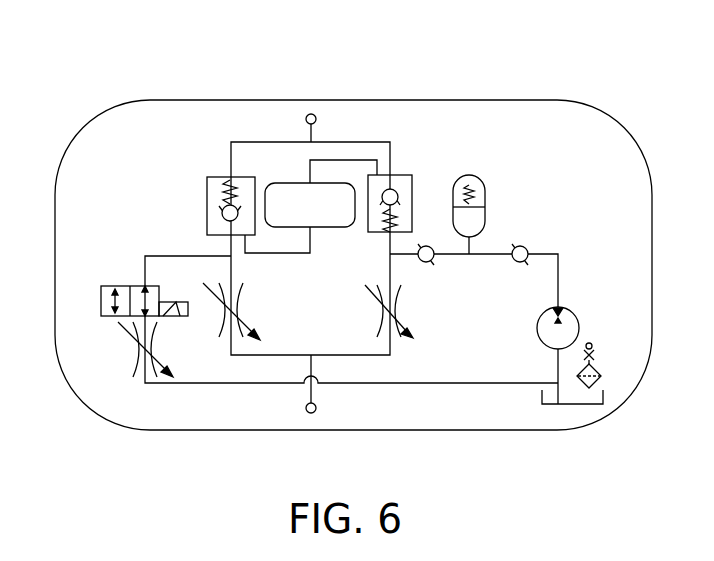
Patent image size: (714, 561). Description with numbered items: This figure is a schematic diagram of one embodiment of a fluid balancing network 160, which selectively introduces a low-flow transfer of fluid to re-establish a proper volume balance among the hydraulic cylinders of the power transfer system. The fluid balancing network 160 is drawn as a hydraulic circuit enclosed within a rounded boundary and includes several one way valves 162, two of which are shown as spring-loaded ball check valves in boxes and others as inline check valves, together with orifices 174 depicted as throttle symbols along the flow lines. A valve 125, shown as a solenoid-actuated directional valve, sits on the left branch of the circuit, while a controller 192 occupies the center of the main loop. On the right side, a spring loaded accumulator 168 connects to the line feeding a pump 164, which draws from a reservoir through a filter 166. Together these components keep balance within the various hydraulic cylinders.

The fluid balancing network 160 is at (122, 58).
The controller 192 is at (295, 188).
The one way valve 162 is at (210, 187).
The spring loaded accumulator 168 is at (486, 196).
The pump 164 is at (576, 318).
The filter 166 is at (600, 365).
The valve 125 is at (143, 287).
The orifice 174 is at (138, 356).